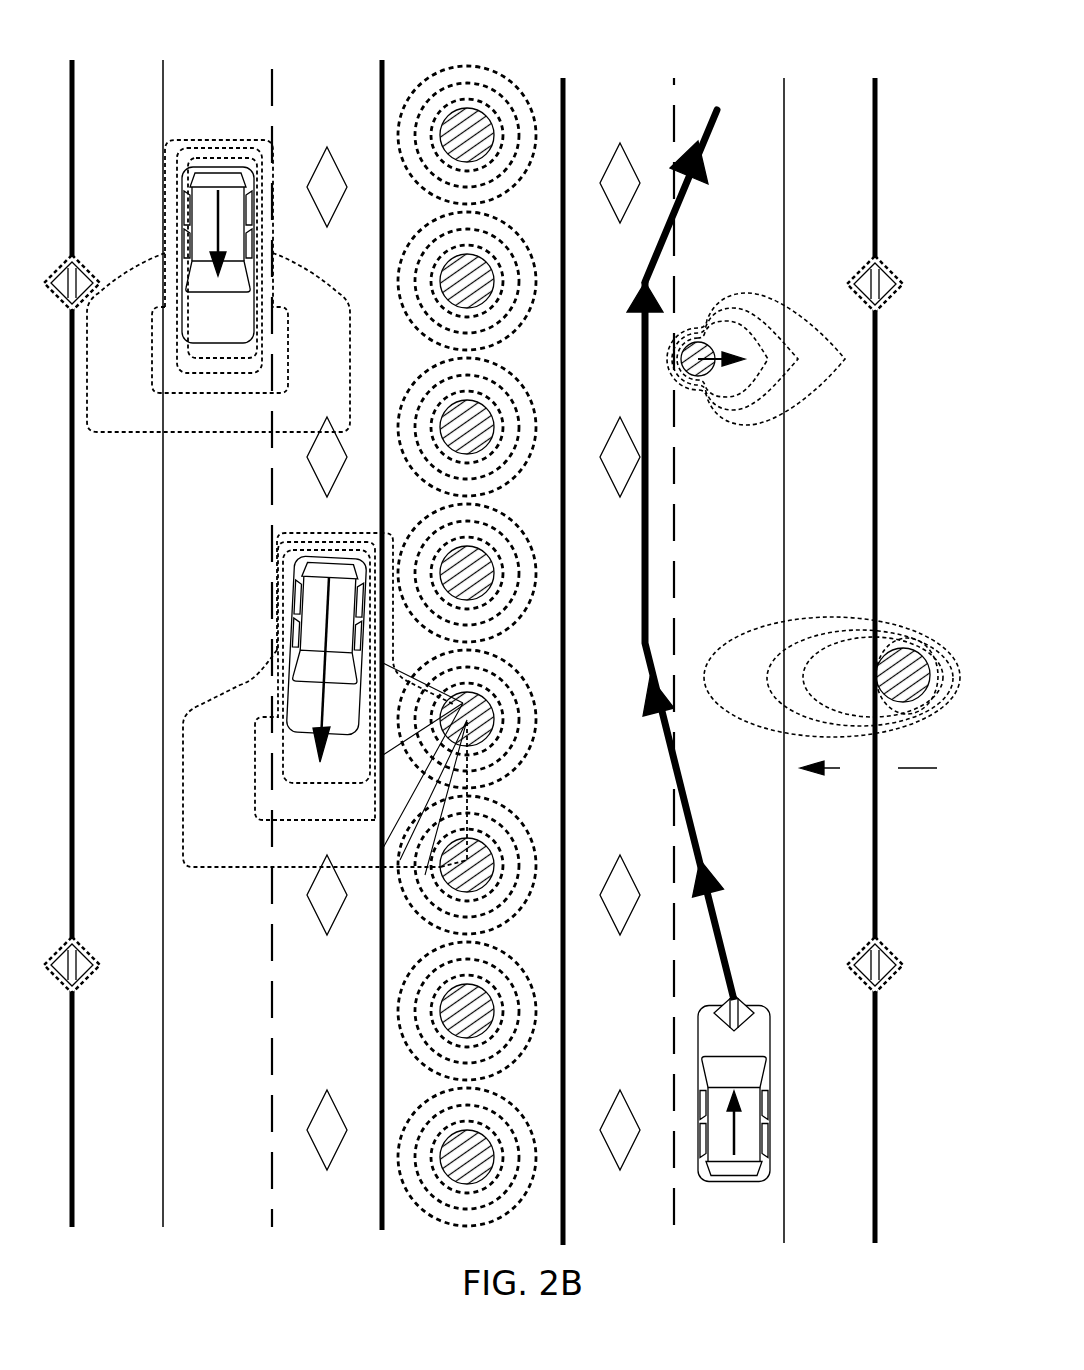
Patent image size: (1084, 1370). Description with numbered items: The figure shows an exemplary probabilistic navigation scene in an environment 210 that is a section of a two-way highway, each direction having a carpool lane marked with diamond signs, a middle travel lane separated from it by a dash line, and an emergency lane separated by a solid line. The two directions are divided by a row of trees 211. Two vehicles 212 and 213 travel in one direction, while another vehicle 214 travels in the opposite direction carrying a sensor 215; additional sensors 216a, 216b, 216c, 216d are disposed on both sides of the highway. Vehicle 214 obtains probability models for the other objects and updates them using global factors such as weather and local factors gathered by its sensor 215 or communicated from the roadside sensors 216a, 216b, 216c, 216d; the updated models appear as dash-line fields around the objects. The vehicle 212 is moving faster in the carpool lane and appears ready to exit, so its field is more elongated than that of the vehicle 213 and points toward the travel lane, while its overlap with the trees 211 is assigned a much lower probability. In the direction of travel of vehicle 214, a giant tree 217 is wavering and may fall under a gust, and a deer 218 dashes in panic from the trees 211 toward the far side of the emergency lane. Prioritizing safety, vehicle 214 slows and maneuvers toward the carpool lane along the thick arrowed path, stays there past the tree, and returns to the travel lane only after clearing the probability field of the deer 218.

The environment 210 is at (225, 38).
The trees 211 is at (474, 632).
The vehicle 212 is at (325, 690).
The vehicle 213 is at (218, 261).
The vehicle 214 is at (734, 1108).
The sensor 215 is at (715, 555).
The sensor 216a is at (857, 983).
The sensor 216b is at (850, 270).
The sensor 216c is at (99, 983).
The sensor 216d is at (93, 270).
The giant tree 217 is at (832, 683).
The deer 218 is at (756, 387).